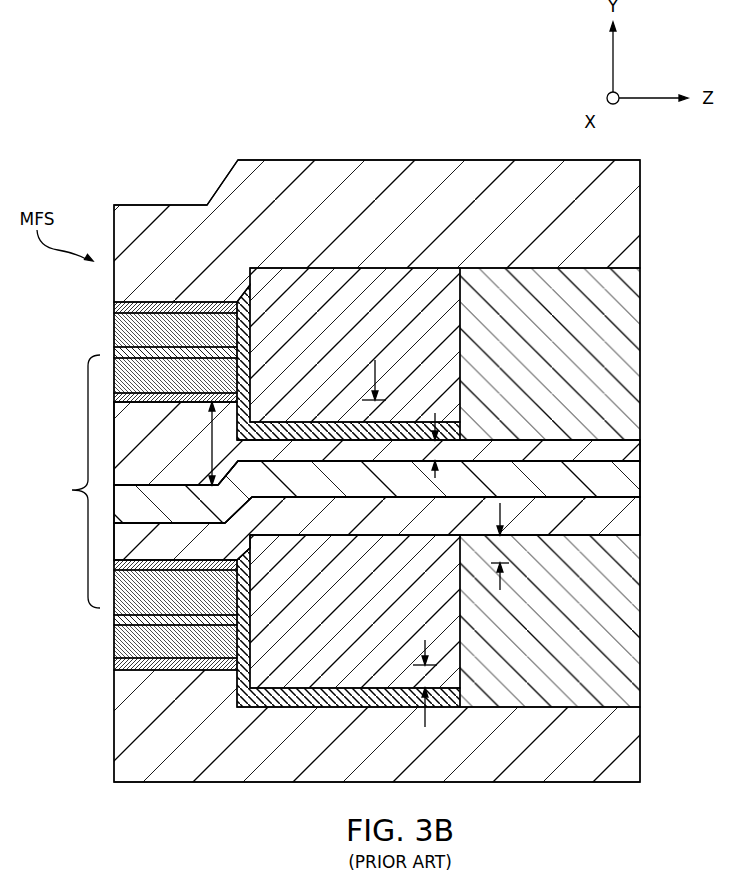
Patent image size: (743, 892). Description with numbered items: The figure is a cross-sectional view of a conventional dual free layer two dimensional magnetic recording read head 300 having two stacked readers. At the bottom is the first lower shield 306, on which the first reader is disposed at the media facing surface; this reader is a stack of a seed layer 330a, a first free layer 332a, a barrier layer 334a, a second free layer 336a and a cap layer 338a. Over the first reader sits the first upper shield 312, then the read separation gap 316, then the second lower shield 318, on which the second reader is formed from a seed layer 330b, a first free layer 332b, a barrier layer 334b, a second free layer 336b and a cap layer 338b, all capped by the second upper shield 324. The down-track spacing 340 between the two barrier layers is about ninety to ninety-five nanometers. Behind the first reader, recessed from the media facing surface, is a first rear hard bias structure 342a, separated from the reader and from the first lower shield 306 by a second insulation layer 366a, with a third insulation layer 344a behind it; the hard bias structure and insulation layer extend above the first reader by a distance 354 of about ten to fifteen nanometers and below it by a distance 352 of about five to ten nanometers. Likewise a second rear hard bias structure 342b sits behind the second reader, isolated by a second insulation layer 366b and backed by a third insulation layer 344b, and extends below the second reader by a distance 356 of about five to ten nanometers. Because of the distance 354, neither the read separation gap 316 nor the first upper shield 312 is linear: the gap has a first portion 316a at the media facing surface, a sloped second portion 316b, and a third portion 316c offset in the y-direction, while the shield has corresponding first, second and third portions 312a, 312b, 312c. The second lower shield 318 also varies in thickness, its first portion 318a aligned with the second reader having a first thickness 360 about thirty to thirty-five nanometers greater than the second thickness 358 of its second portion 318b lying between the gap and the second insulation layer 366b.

The DFL TDMR read head 300 is at (124, 68).
The first lower shield 306 is at (314, 752).
The first upper shield 312 is at (407, 552).
The first portion of the first upper shield 312a is at (148, 559).
The second portion of the first upper shield 312b is at (252, 543).
The third portion of the first upper shield 312c is at (350, 528).
The read separation gap 316 is at (407, 516).
The first portion of the RSG 316a is at (148, 516).
The second portion of the RSG 316b is at (264, 506).
The third portion of the RSG 316c is at (332, 493).
The second lower shield 318 is at (407, 443).
The first portion of the second lower shield 318a is at (140, 442).
The second portion of the second lower shield 318b is at (548, 452).
The second upper shield 324 is at (375, 229).
The seed layer 330a is at (114, 664).
The seed layer 330b is at (115, 404).
The first free layer 332a is at (114, 641).
The first free layer 332b is at (160, 387).
The barrier layer 334a is at (114, 620).
The barrier layer 334b is at (115, 352).
The second free layer 336a is at (114, 597).
The second free layer 336b is at (160, 342).
The cap layer 338a is at (114, 566).
The cap layer 338b is at (113, 307).
The down-track spacing 340 is at (65, 481).
The first rear hard bias structure 342a is at (327, 625).
The second rear hard bias structure 342b is at (310, 332).
The third insulation layer 344a is at (545, 640).
The third insulation layer 344b is at (528, 367).
The distance 352 is at (428, 680).
The distance 354 is at (500, 547).
The distance 356 is at (372, 410).
The second thickness 358 is at (433, 452).
The first thickness 360 is at (205, 452).
The second insulation layer 366a is at (302, 697).
The second insulation layer 366b is at (300, 433).